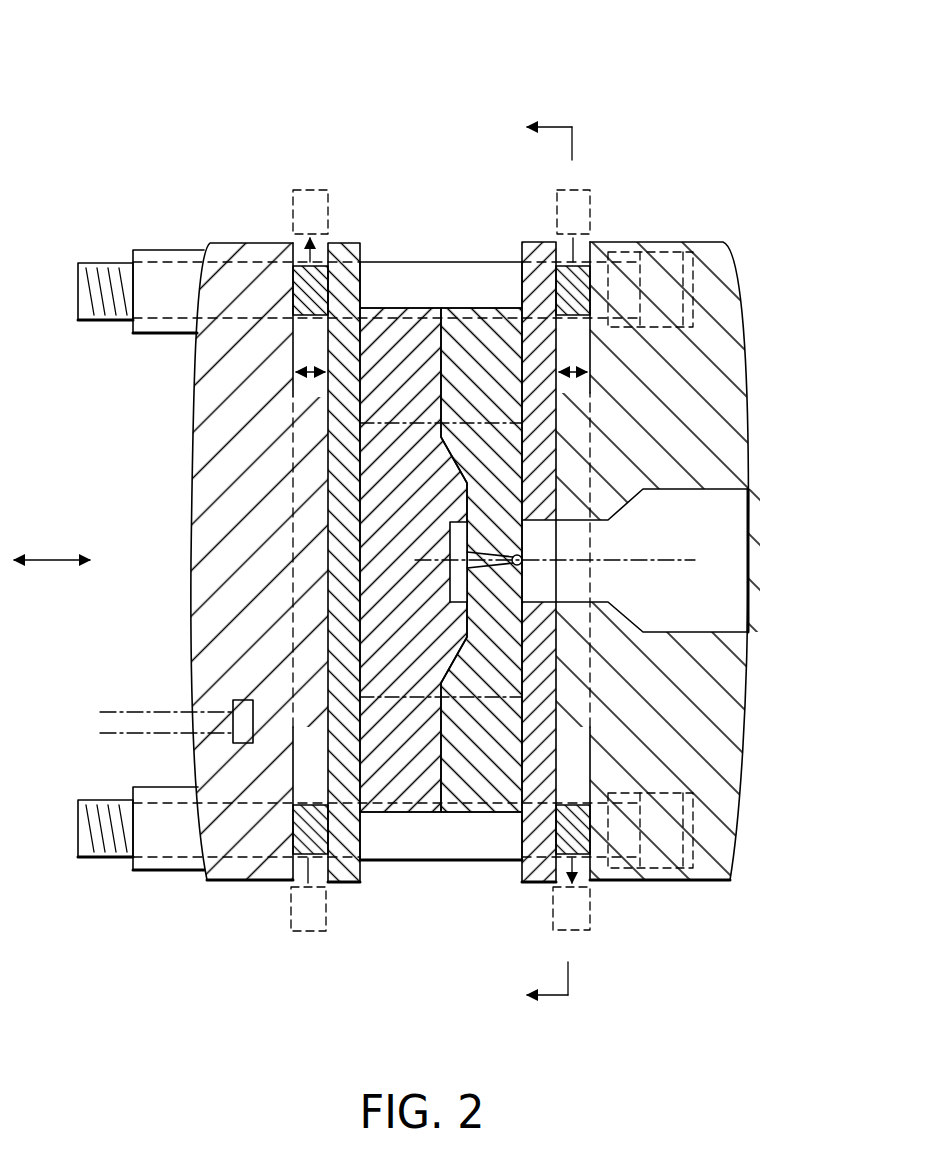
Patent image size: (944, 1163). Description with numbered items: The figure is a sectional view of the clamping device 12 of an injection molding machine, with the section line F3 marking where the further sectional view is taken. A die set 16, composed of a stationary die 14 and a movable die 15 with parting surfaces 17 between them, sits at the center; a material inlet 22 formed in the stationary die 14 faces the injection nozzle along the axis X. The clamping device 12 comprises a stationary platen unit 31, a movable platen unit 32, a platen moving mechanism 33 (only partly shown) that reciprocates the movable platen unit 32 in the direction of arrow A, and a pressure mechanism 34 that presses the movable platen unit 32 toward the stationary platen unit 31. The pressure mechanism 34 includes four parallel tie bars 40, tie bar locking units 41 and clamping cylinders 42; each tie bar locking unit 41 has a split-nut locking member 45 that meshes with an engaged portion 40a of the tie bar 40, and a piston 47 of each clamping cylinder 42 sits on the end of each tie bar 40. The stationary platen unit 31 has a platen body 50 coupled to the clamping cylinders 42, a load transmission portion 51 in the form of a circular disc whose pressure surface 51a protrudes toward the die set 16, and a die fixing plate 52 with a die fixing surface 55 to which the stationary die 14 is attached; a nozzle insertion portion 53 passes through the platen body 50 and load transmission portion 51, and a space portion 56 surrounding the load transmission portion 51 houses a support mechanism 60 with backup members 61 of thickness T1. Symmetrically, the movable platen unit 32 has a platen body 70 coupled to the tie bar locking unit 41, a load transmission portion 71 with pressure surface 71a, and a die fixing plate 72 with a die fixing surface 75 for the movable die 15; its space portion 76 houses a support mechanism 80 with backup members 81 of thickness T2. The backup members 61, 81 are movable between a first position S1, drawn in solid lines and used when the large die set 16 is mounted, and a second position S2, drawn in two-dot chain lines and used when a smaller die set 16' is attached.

The clamping device 12 is at (541, 78).
The stationary die 14 is at (480, 330).
The movable die 15 is at (402, 330).
The die set 16 is at (441, 288).
The die set 16' is at (441, 805).
The parting surfaces 17 is at (442, 728).
The material inlet 22 is at (522, 566).
The stationary platen unit 31 is at (619, 225).
The movable platen unit 32 is at (233, 228).
The platen moving mechanism 33 is at (95, 715).
The pressure mechanism 34 is at (378, 250).
The tie bar 40 is at (494, 262).
The engaged portion 40a is at (112, 263).
The tie bar locking unit 41 is at (140, 230).
The clamping cylinder 42 is at (612, 250).
The locking member 45 is at (185, 250).
The piston 47 is at (700, 283).
The platen body 50 is at (700, 728).
The load transmission portion 51 is at (578, 433).
The pressure surface 51a is at (552, 470).
The die fixing plate 52 is at (535, 643).
The nozzle insertion portion 53 is at (690, 632).
The die fixing surface 55 is at (510, 405).
The space portion 56 is at (575, 345).
The support mechanism 60 is at (599, 232).
The backup member 61 is at (556, 246).
The platen body 70 is at (230, 656).
The load transmission portion 71 is at (310, 495).
The pressure surface 71a is at (322, 527).
The die fixing plate 72 is at (326, 594).
The die fixing surface 75 is at (322, 455).
The space portion 76 is at (300, 345).
The support mechanism 80 is at (290, 232).
The backup member 81 is at (336, 246).
The first position S1 is at (293, 290).
The second position S2 is at (310, 190).
The thickness T1 is at (576, 378).
The thickness T2 is at (306, 384).
The arrow A is at (58, 560).
The axis X is at (635, 560).
The section line F3 is at (530, 562).